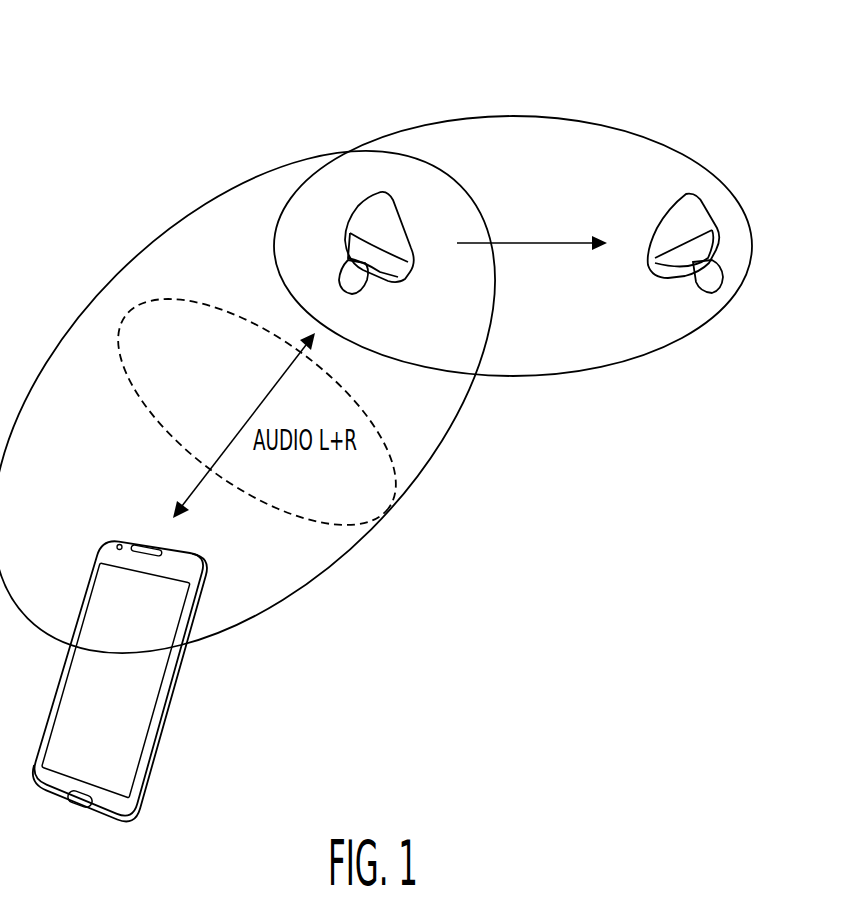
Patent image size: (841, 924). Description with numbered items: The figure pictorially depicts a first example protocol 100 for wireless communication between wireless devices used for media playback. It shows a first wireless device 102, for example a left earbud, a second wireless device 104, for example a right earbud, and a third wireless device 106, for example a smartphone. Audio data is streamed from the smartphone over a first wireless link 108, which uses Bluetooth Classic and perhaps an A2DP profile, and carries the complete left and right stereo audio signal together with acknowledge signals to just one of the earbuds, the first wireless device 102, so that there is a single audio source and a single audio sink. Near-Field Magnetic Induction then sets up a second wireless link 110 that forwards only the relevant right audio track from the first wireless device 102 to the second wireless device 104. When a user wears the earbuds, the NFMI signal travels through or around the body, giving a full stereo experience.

The first example protocol 100 is at (140, 143).
The first wireless device 102 is at (360, 207).
The second wireless device 104 is at (703, 200).
The third wireless device 106 is at (160, 716).
The first wireless link 108 is at (396, 462).
The second wireless link 110 is at (553, 243).